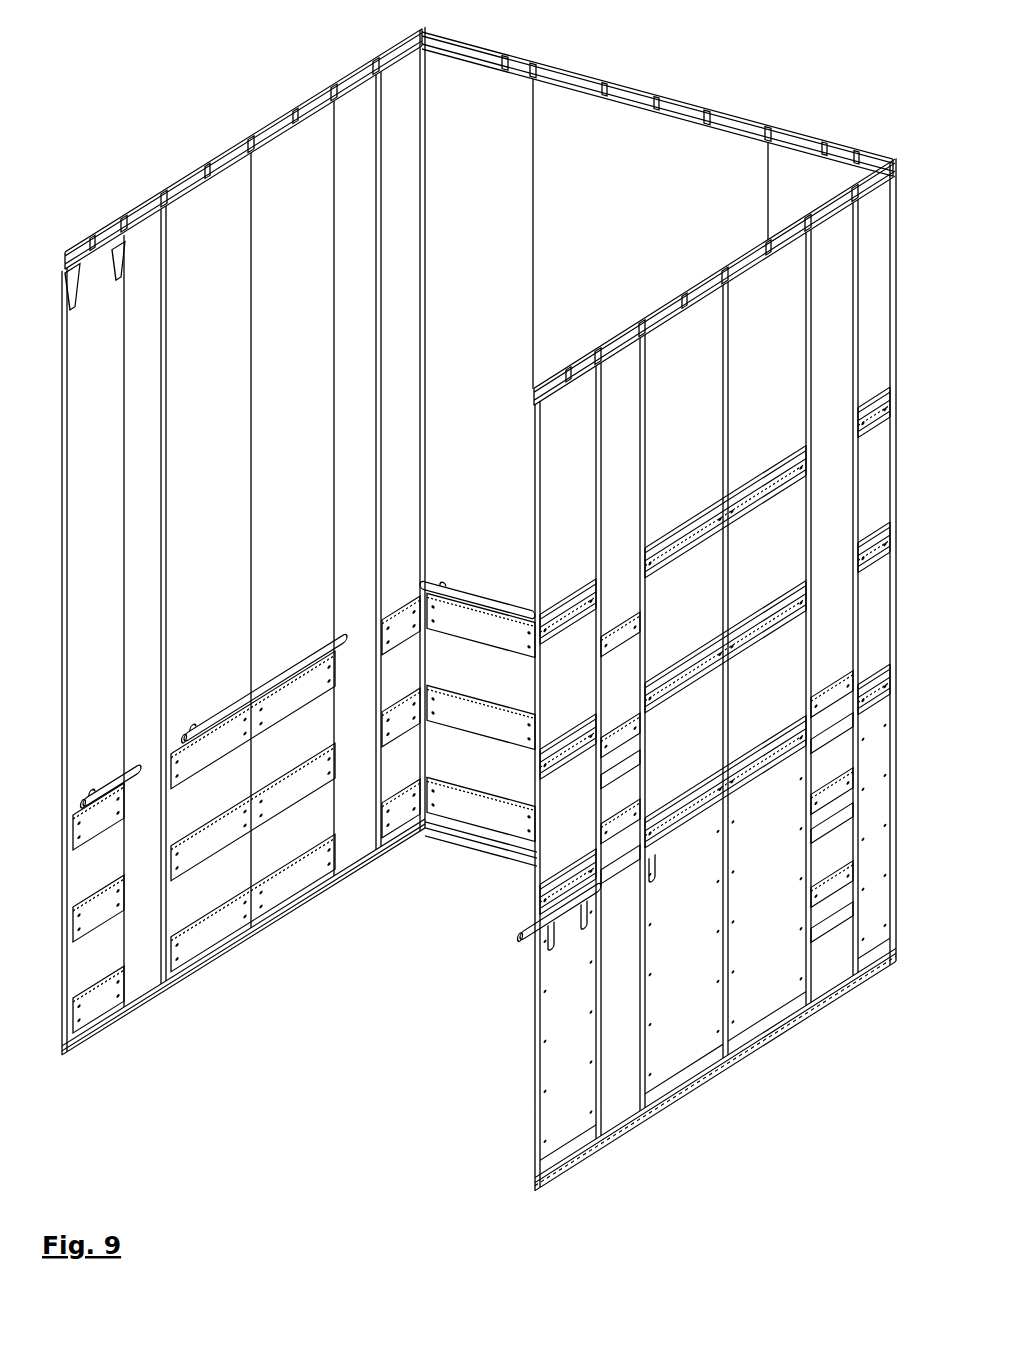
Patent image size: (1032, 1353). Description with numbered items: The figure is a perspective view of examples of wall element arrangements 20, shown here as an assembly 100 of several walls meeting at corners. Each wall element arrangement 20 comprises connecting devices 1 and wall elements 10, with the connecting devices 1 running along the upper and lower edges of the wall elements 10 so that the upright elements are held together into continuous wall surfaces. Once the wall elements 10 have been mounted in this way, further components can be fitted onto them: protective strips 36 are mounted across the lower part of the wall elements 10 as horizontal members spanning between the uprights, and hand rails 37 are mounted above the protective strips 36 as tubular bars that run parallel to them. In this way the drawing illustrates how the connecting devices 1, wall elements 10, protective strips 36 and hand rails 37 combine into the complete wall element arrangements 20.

The wall assembly 100 is at (198, 94).
The connecting device 1 is at (508, 50).
The wall element 10 is at (663, 213).
The wall element arrangement 20 is at (186, 240).
The protective strip 36 is at (220, 927).
The hand rail 37 is at (276, 685).